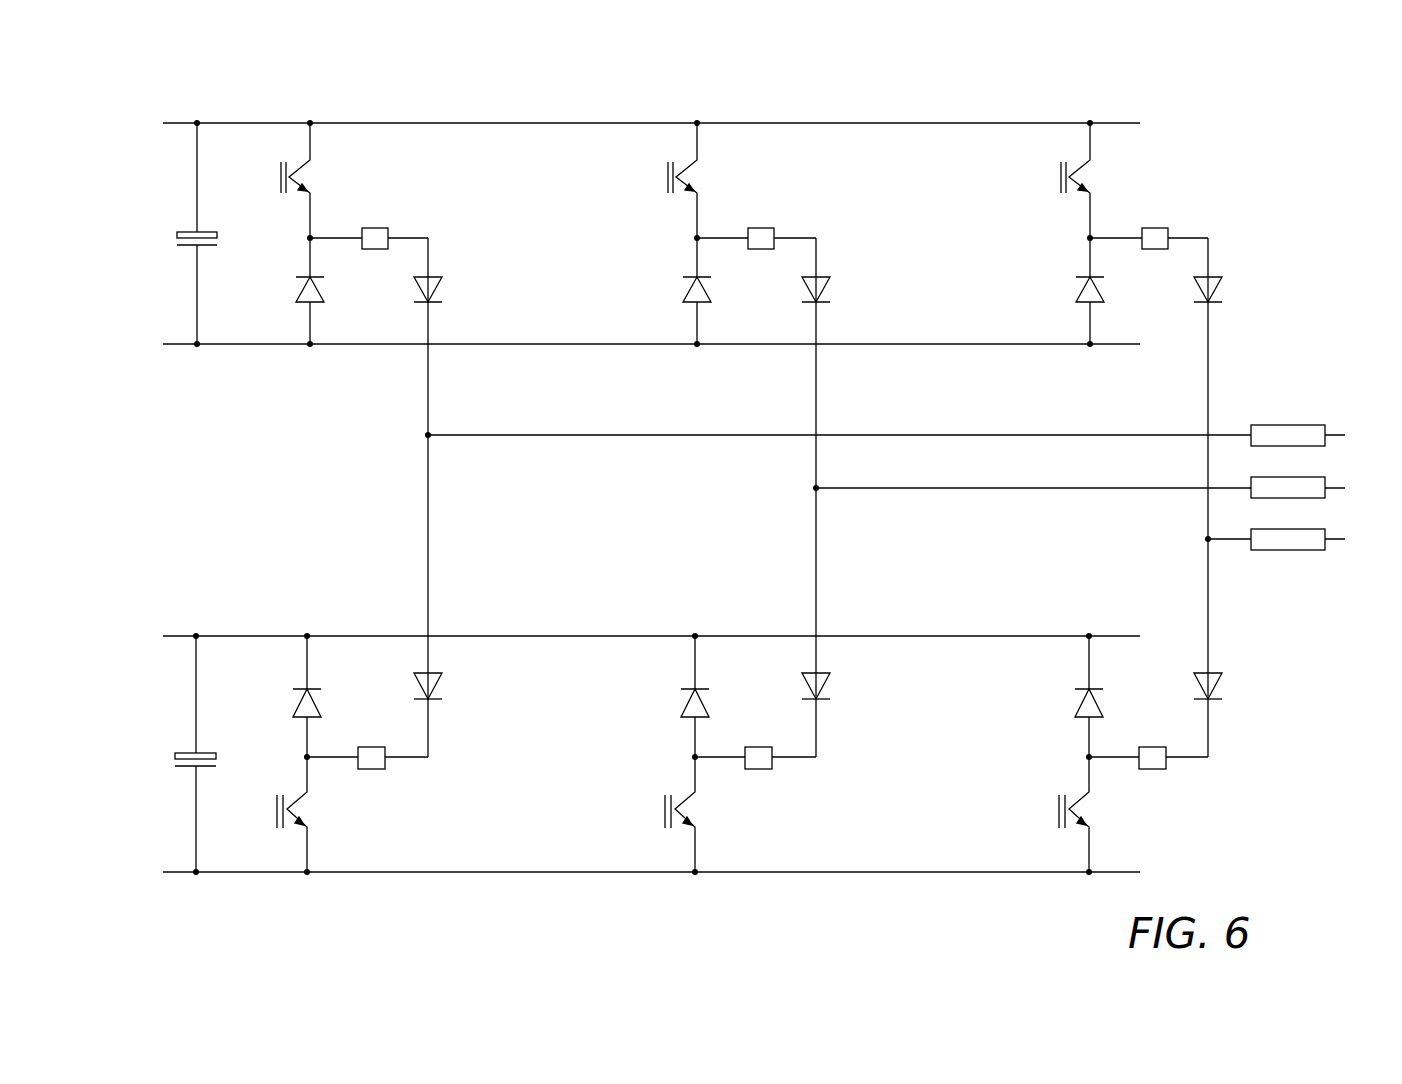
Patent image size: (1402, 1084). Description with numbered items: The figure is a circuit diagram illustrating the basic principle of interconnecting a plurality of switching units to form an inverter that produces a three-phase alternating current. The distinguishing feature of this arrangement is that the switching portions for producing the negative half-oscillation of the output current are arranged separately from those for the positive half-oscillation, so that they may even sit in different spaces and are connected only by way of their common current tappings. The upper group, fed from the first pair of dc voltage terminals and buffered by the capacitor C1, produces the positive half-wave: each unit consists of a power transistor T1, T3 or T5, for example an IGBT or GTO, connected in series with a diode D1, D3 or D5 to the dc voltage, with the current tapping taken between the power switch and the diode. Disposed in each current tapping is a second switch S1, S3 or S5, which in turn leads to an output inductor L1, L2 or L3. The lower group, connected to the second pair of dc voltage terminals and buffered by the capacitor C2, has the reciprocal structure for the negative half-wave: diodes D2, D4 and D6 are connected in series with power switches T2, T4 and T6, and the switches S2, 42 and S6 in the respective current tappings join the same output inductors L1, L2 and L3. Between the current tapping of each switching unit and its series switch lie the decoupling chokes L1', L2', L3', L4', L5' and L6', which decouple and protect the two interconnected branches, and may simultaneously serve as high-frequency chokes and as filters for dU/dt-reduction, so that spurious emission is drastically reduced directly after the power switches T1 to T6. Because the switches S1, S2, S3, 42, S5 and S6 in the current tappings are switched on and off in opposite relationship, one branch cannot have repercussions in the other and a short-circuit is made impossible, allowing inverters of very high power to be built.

The first DC link capacitor C1 is at (181, 233).
The second DC link capacitor C2 is at (180, 754).
The power transistor T1 is at (310, 179).
The power switch T2 is at (306, 816).
The power switch T3 is at (696, 179).
The power switch T4 is at (694, 816).
The power switch T5 is at (1090, 179).
The power switch T6 is at (1088, 816).
The diode D1 is at (293, 291).
The freewheeling diode D2 is at (292, 696).
The freewheeling diode D3 is at (681, 291).
The freewheeling diode D4 is at (680, 696).
The freewheeling diode D5 is at (1074, 291).
The freewheeling diode D6 is at (1074, 696).
The second switch S1 is at (444, 497).
The switch S2 is at (444, 692).
The switch S3 is at (831, 497).
The series diode S4 (labeled 42) 42 is at (830, 692).
The switch S5 is at (1223, 497).
The switch S6 is at (1222, 692).
The decoupling choke L1' is at (369, 222).
The decoupling choke L2' is at (367, 742).
The decoupling choke L3' is at (756, 222).
The decoupling choke L4' is at (755, 742).
The decoupling choke L5' is at (1149, 222).
The decoupling choke L6' is at (1148, 742).
The output inductor L1 is at (898, 436).
The output inductor L2 is at (1092, 489).
The output inductor L3 is at (1288, 540).